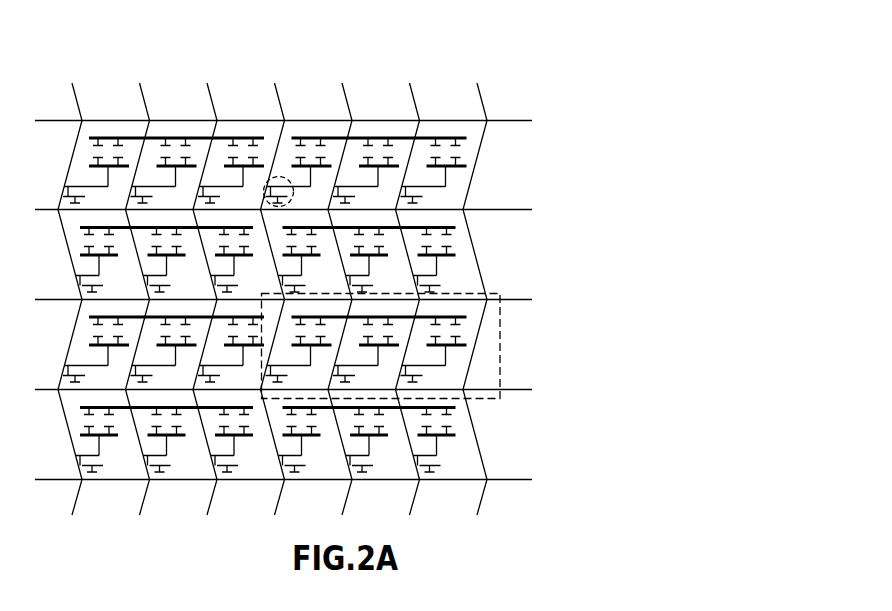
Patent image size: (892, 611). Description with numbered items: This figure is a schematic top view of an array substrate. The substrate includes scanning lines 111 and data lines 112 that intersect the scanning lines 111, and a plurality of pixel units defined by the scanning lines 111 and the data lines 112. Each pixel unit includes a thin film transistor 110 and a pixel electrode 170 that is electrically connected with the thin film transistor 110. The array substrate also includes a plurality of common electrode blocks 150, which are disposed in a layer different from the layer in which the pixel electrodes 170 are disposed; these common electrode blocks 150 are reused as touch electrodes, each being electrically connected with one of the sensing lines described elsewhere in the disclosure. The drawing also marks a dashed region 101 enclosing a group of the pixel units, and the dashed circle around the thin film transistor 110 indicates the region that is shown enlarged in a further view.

The memory cell unit region 101 is at (500, 366).
The thin film transistor 110 is at (284, 177).
The scanning lines 111 is at (63, 120).
The data lines 112 is at (144, 95).
The common electrode blocks 150 is at (442, 138).
The pixel electrode 170 is at (470, 166).